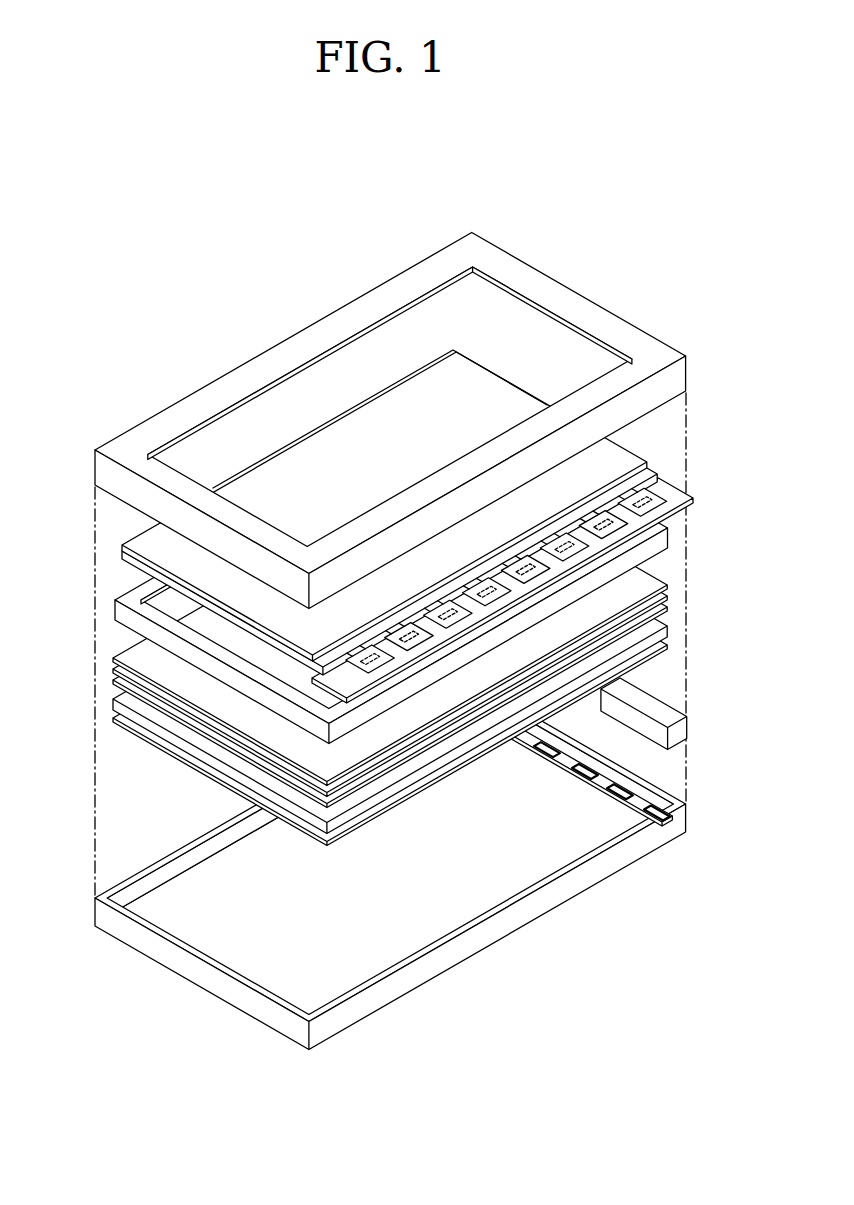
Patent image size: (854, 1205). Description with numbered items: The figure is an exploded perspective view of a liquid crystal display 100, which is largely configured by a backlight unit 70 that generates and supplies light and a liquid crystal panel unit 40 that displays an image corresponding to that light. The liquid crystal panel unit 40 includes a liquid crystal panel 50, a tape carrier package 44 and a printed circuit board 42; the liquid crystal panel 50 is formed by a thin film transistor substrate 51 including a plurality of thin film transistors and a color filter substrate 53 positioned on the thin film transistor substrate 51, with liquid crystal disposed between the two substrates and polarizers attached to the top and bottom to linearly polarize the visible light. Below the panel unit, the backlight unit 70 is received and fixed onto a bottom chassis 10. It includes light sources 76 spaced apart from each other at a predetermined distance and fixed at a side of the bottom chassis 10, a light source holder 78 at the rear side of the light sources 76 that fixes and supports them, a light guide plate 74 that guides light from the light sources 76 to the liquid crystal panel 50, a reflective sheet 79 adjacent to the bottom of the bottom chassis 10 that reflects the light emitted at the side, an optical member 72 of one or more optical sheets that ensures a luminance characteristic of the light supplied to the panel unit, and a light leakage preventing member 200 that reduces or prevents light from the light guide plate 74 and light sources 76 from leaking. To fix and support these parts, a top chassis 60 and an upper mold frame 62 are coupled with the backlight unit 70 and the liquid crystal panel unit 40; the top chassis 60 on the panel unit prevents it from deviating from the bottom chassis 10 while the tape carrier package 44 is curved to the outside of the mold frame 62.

The liquid crystal display 100 is at (312, 291).
The bottom chassis 10 is at (687, 822).
The liquid crystal panel unit 40 is at (389, 513).
The printed circuit board 42 is at (678, 510).
The tape carrier package 44 is at (664, 494).
The liquid crystal panel 50 is at (406, 380).
The thin film transistor substrate 51 is at (660, 479).
The color filter substrate 53 is at (647, 466).
The top chassis 60 is at (578, 294).
The upper mold frame 62 is at (115, 604).
The backlight unit 70 is at (431, 654).
The optical member 72 is at (711, 821).
The light guide plate 74 is at (669, 636).
The light sources 76 is at (591, 761).
The light source holder 78 is at (568, 762).
The reflective sheet 79 is at (668, 651).
The light leakage preventing member 200 is at (656, 709).